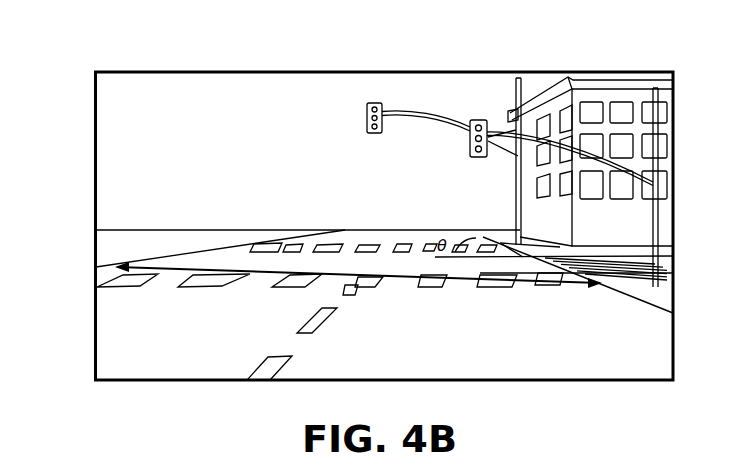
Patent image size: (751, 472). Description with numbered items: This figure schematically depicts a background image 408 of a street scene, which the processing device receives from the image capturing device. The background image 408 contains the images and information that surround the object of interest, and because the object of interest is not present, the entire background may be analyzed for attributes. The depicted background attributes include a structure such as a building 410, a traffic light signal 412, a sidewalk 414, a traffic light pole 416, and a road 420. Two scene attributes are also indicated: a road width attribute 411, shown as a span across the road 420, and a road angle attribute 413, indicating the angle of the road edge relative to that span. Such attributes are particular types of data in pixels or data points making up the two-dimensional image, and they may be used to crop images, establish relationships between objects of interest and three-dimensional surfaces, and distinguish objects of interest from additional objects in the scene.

The background images 408 is at (517, 62).
The building 410 is at (610, 95).
The road width attribute 411 is at (407, 283).
The traffic light signal 412 is at (377, 103).
The road angle attribute 413 is at (476, 235).
The sidewalk 414 is at (558, 252).
The traffic light pole 416 is at (657, 163).
The road 420 is at (517, 345).